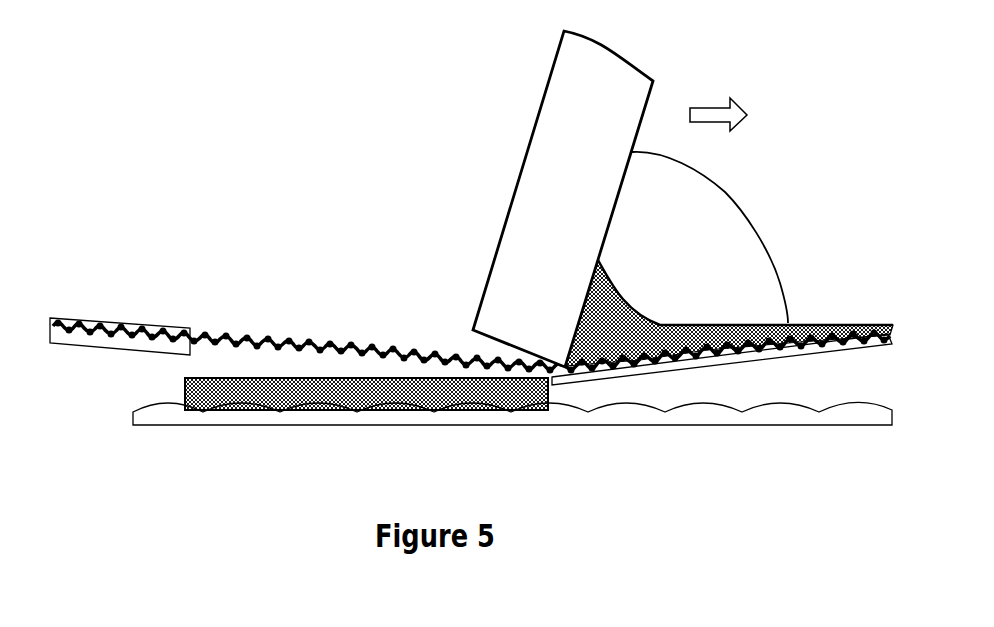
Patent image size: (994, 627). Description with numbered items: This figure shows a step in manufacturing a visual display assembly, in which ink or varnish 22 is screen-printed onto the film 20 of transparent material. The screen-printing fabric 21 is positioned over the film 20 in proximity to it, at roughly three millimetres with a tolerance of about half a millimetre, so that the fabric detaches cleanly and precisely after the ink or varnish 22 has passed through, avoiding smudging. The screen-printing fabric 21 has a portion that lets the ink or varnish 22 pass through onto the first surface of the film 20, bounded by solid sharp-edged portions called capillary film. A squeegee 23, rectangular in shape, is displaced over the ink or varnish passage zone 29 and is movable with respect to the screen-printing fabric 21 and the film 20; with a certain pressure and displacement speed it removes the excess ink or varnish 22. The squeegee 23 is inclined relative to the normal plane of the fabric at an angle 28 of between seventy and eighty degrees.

The film of transparent material 20 is at (705, 421).
The screen-printing fabric 21 is at (210, 325).
The ink or varnish 22 is at (615, 313).
The squeegee 23 is at (582, 217).
The angle 28 is at (738, 208).
The ink or varnish passage zone 29 is at (358, 395).